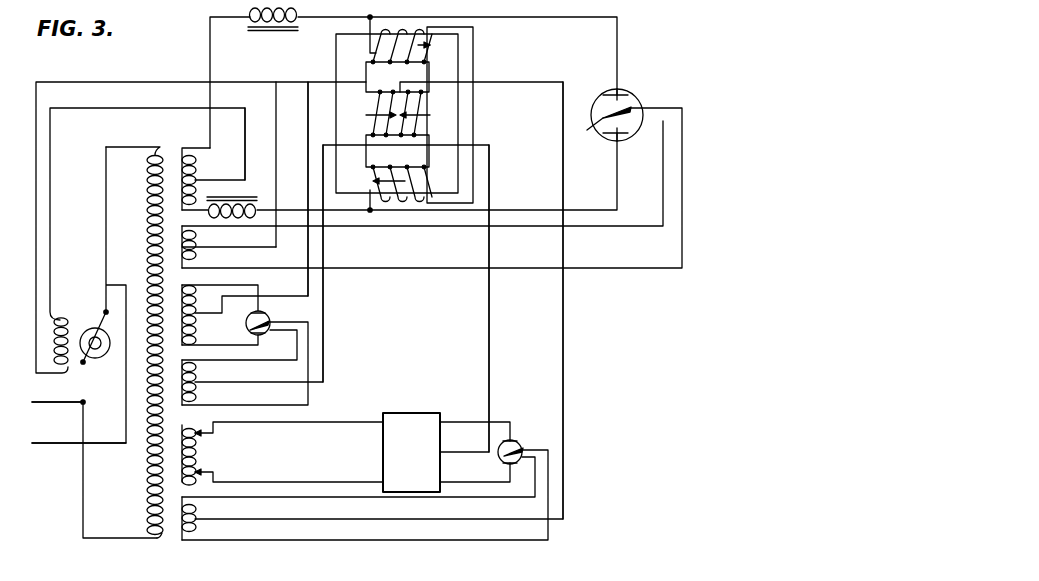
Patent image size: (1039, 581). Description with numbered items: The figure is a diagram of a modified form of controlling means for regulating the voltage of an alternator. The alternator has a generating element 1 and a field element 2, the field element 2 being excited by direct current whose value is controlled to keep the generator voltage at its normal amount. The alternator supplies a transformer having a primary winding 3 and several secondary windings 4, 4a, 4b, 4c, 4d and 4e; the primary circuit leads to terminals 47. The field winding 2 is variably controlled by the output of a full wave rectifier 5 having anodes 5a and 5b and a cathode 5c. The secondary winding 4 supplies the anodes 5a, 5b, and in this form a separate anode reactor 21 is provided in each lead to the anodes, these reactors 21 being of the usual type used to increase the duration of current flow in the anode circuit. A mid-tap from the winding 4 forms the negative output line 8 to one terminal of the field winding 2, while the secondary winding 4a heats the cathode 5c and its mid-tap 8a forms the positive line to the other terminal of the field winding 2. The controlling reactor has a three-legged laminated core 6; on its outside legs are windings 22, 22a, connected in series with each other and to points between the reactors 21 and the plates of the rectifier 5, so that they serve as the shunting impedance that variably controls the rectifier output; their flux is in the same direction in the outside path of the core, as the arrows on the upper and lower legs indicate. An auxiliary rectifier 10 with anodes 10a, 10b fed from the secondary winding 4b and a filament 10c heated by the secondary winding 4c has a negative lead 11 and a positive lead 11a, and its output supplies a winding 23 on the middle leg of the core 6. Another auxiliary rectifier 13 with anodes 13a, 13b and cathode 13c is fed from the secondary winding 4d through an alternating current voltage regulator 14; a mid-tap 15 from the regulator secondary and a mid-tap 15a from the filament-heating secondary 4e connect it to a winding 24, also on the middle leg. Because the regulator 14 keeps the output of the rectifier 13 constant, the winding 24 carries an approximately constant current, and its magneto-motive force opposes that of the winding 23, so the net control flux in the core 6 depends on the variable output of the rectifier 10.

The generating element 1 is at (102, 330).
The field element 2 is at (68, 324).
The primary winding 3 is at (147, 240).
The secondary winding 4 is at (196, 165).
The secondary winding 4a is at (196, 238).
The secondary winding 4b is at (196, 296).
The secondary winding 4c is at (196, 395).
The secondary winding 4d is at (196, 452).
The secondary winding 4e is at (196, 508).
The rectifier 5 is at (606, 98).
The anode 5a is at (628, 93).
The anode 5b is at (622, 135).
The cathode 5c is at (602, 129).
The laminated core 6 is at (336, 57).
The negative output line 8 is at (246, 137).
The mid-tap 8a is at (277, 135).
The auxiliary rectifier 10 is at (252, 318).
The anode 10a is at (266, 313).
The anode 10b is at (262, 335).
The cathode 10c is at (250, 330).
The line 11 is at (308, 178).
The lead 11a is at (323, 245).
The auxiliary rectifier 13 is at (507, 445).
The anode 13a is at (518, 442).
The anode 13b is at (515, 463).
The cathode 13c is at (504, 456).
The alternating current voltage regulator 14 is at (382, 437).
The mid-tap 15 is at (489, 303).
The mid-tap 15a is at (564, 358).
The anode reactor 21 is at (234, 186).
The winding 22 is at (430, 45).
The winding 22a is at (418, 180).
The winding 23 is at (374, 102).
The winding 24 is at (429, 102).
The supply terminals 47 is at (47, 450).